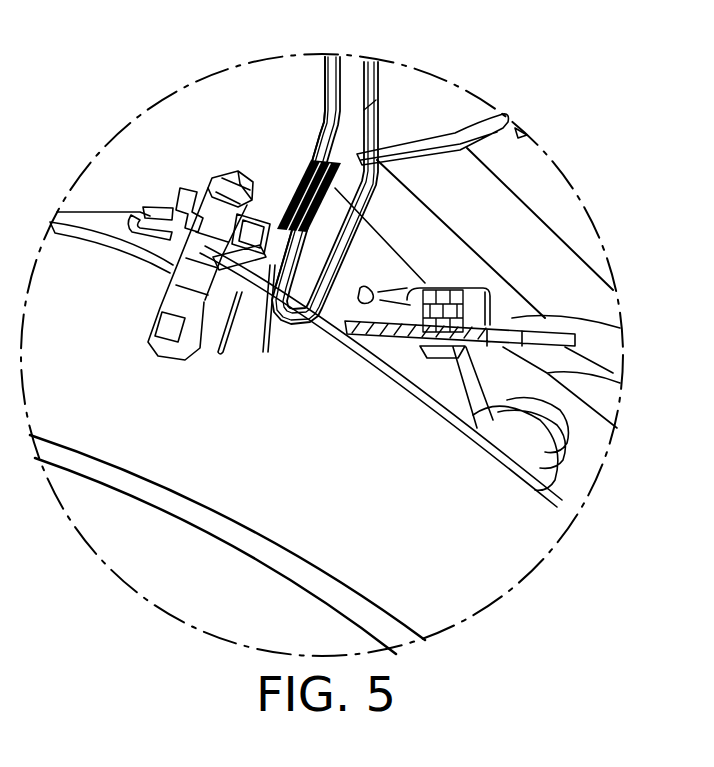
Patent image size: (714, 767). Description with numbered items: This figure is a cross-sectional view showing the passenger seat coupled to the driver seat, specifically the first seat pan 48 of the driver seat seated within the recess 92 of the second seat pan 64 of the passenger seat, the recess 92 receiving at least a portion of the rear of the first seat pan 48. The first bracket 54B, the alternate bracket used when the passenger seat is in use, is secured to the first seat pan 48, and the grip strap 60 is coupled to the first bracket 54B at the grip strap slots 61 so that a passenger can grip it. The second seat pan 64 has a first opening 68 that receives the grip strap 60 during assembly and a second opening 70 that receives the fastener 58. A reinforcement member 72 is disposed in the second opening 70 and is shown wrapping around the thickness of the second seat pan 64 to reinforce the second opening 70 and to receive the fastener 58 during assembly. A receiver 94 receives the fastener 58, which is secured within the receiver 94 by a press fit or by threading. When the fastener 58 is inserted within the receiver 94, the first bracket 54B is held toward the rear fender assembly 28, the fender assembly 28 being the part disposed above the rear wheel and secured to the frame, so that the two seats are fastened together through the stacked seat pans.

The rear fender assembly 28 is at (157, 264).
The first seat pan 48 is at (527, 178).
The first bracket 54B is at (373, 369).
The fastener 58 is at (216, 177).
The grip strap 60 is at (323, 97).
The grip strap slots 61 is at (277, 316).
The second seat pan 64 is at (412, 143).
The first opening 68 is at (352, 73).
The second opening 70 is at (259, 207).
The reinforcement member 72 is at (177, 188).
The recess 92 is at (488, 114).
The receiver 94 is at (150, 342).